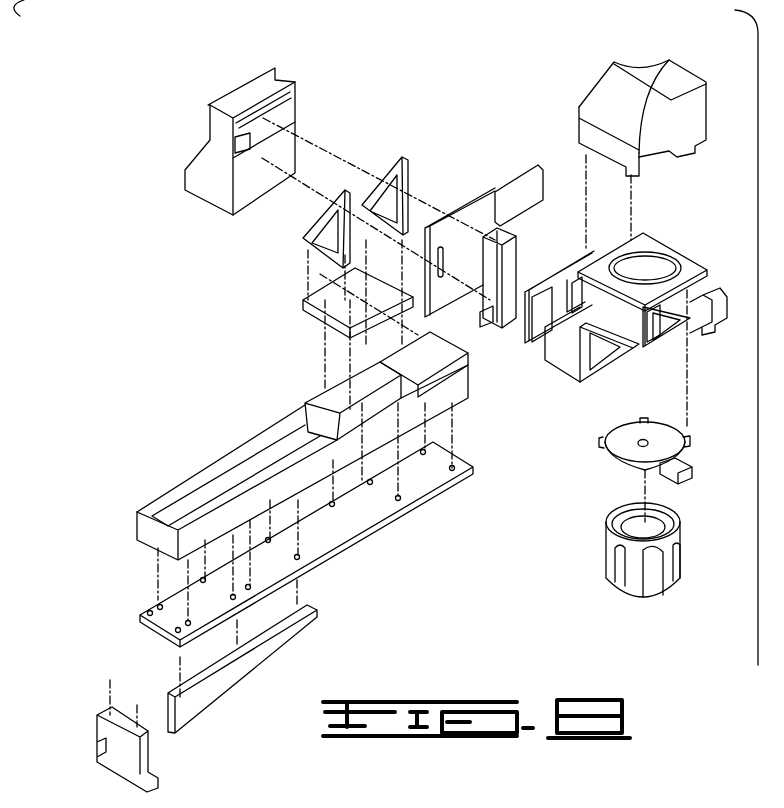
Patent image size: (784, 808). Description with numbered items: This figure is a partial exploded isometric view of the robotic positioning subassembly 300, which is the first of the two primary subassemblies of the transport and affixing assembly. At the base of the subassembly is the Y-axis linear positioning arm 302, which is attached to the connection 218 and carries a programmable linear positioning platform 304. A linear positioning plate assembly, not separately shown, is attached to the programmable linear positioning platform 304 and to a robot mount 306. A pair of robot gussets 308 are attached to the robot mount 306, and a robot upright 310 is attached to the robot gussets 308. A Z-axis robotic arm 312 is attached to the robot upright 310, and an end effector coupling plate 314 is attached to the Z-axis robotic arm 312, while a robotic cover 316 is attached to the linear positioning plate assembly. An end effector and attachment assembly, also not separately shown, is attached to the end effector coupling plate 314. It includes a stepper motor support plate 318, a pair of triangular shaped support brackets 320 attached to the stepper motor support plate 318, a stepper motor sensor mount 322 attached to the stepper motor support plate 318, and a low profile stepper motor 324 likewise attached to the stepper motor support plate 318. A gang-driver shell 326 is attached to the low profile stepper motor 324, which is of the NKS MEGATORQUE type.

The robotic positioning subassembly 300 is at (467, 90).
The Y-axis linear positioning arm 302 is at (172, 488).
The programmable linear positioning platform 304 is at (305, 407).
The robot mount 306 is at (303, 302).
The robot gussets 308 is at (402, 157).
The robot upright 310 is at (548, 178).
The Z-axis robotic arm 312 is at (497, 223).
The end effector coupling plate 314 is at (583, 262).
The robotic cover 316 is at (202, 200).
The stepper motor support plate 318 is at (657, 238).
The triangular shaped support brackets 320 is at (643, 346).
The stepper motor sensor mount 322 is at (727, 302).
The low profile stepper motor 324 is at (605, 447).
The gang-driver shell 326 is at (633, 598).
The connection 218 is at (177, 697).